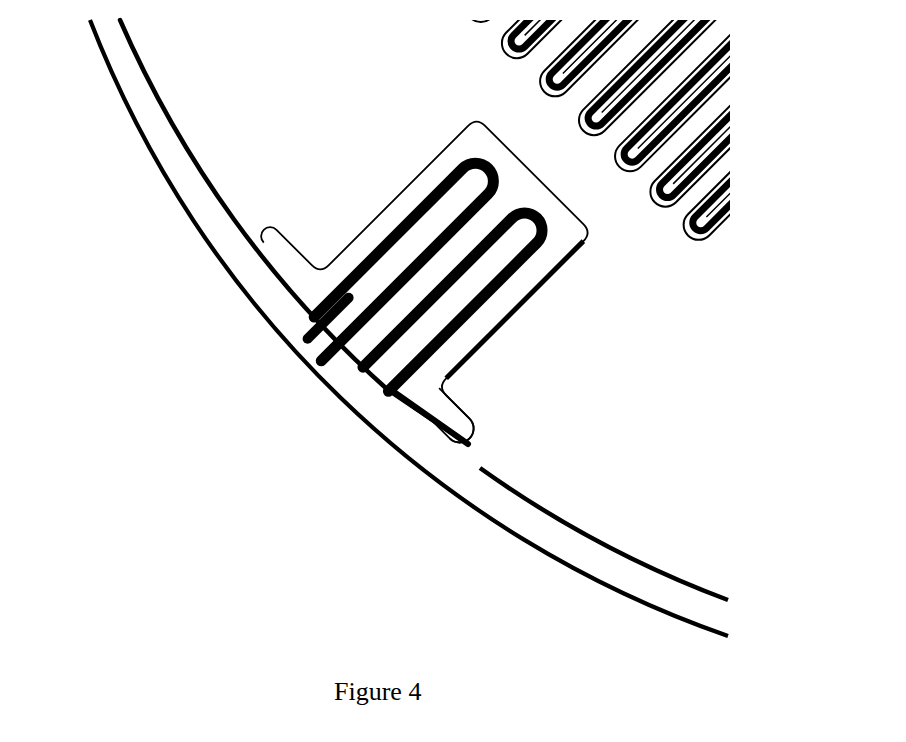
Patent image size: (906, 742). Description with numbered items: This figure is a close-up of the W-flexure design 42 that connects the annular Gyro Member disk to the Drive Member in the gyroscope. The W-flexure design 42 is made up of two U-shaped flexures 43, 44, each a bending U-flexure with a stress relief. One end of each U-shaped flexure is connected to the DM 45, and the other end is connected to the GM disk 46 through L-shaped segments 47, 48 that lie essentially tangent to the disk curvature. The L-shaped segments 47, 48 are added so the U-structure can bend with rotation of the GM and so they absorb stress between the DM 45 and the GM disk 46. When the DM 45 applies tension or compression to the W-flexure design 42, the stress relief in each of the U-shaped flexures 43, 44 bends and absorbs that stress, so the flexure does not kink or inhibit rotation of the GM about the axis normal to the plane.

The W-flexure design 42 is at (530, 372).
The U-shaped flexure 43 is at (412, 200).
The U-shaped flexure 44 is at (497, 290).
The Drive Member 45 is at (409, 328).
The GM disk 46 is at (431, 257).
The L-shaped segment 47 is at (278, 285).
The L-shaped segment 48 is at (418, 400).